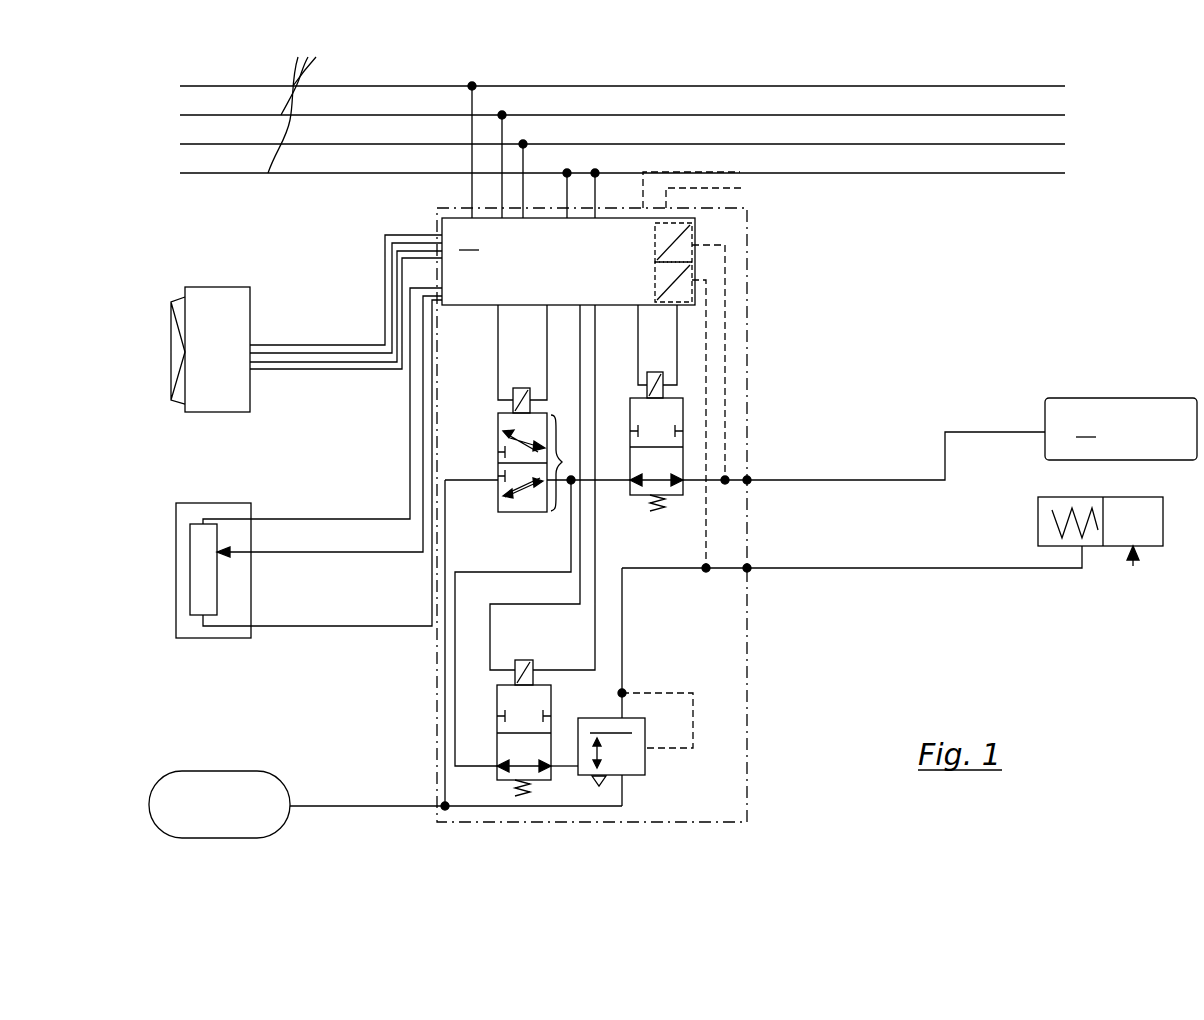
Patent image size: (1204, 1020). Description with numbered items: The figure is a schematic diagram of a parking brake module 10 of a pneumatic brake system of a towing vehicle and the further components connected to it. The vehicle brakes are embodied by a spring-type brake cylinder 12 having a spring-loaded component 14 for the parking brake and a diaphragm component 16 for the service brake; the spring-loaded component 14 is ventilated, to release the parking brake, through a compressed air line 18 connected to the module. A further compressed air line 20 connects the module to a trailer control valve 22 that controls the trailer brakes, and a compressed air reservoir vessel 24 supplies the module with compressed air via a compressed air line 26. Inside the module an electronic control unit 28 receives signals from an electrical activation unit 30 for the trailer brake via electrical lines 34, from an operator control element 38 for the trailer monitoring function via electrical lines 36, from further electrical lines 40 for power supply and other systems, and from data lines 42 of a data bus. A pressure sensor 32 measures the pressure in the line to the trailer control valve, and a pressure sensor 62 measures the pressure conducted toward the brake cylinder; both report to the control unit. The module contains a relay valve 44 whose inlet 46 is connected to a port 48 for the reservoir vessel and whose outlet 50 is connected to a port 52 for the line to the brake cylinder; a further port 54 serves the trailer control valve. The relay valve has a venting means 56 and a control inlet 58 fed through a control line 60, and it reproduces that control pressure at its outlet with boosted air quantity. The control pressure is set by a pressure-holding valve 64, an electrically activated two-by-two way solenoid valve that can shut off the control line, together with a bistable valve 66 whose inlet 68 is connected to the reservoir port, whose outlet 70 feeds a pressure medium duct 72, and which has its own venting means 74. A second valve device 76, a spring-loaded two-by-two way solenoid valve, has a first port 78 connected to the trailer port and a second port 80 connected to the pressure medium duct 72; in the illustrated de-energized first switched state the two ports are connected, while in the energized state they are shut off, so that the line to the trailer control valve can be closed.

The parking brake module 10 is at (747, 290).
The spring-type brake cylinder 12 is at (1133, 566).
The spring-loaded component 14 is at (1040, 497).
The diaphragm component 16 is at (1163, 518).
The compressed air line 18 is at (854, 572).
The compressed air line 20 is at (870, 482).
The trailer control valve 22 is at (1121, 429).
The compressed air reservoir vessel 24 is at (262, 838).
The compressed air line 26 is at (360, 808).
The electronic control unit 28 is at (568, 261).
The electrical activation unit 30 is at (176, 530).
The pressure sensor 32 is at (680, 232).
The electrical lines 34 is at (336, 626).
The electrical lines 36 is at (352, 369).
The operator control element 38 is at (190, 287).
The electrical lines 40 is at (622, 126).
The data lines 42 is at (740, 172).
The relay valve 44 is at (646, 760).
The inlet 46 is at (626, 778).
The port 48 is at (432, 812).
The outlet 50 is at (625, 716).
The port 52 is at (748, 572).
The port 54 is at (748, 484).
The venting means 56 is at (597, 790).
The control inlet 58 is at (578, 760).
The control line 60 is at (562, 770).
The pressure sensor 62 is at (690, 282).
The pressure-holding valve 64 is at (540, 684).
The bistable valve 66 is at (513, 405).
The inlet 68 is at (498, 478).
The outlet 70 is at (565, 463).
The pressure medium duct 72 is at (571, 556).
The venting means 74 is at (493, 495).
The second valve device 76 is at (647, 392).
The first port 78 is at (688, 498).
The second port 80 is at (624, 498).